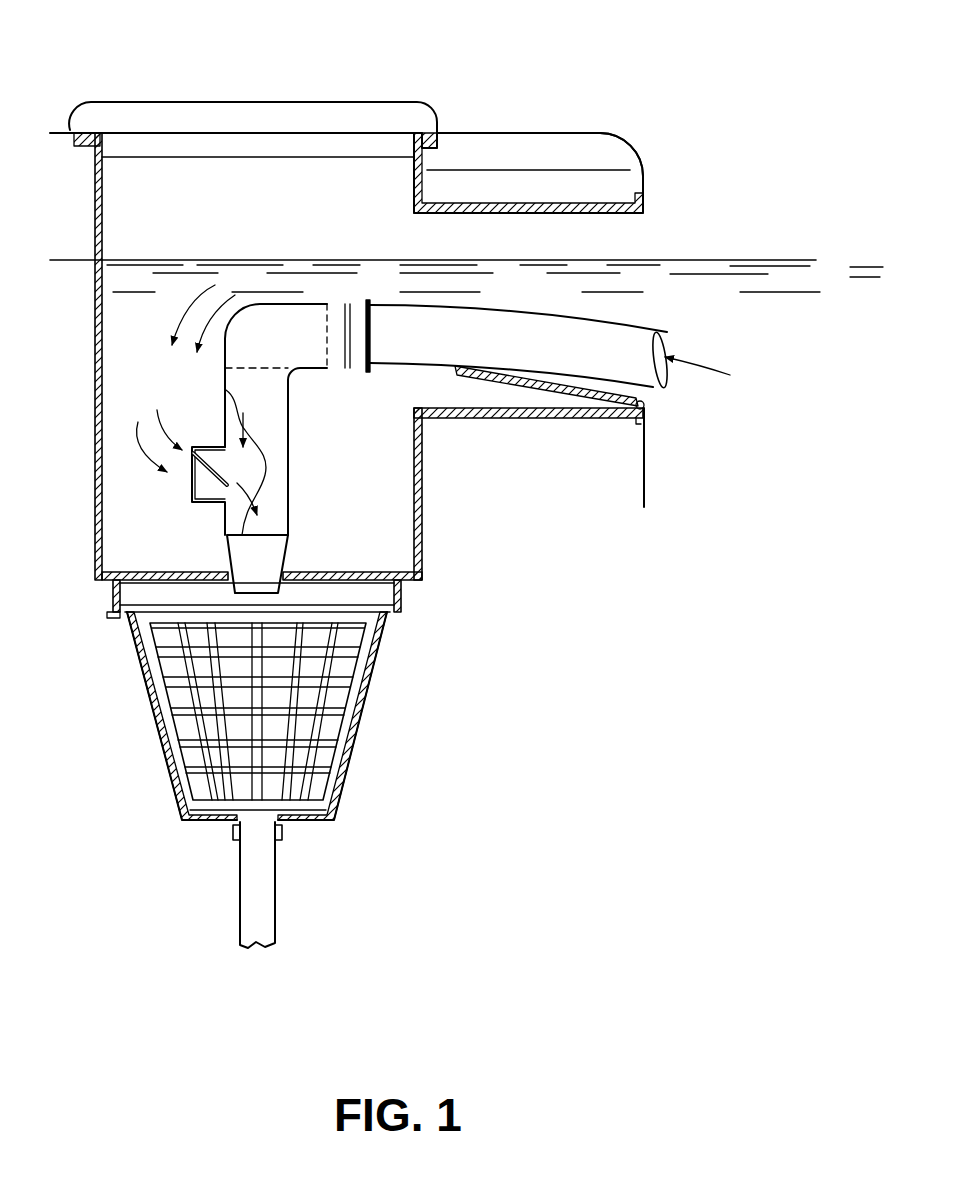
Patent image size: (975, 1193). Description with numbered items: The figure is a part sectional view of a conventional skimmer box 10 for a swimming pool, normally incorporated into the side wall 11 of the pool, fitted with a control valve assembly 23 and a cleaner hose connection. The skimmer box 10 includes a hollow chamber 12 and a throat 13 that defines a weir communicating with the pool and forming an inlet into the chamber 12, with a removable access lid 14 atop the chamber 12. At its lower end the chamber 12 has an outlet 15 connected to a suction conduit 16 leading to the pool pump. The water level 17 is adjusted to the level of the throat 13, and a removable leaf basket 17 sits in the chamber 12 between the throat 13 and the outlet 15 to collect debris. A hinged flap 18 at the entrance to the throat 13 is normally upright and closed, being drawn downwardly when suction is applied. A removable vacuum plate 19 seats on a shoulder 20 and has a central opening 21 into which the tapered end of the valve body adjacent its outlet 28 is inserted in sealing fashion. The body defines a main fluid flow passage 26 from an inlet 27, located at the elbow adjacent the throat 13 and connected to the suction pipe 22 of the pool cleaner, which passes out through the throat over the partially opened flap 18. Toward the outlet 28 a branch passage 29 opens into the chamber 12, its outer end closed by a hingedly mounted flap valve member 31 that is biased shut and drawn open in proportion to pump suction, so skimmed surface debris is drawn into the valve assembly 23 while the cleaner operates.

The skimmer box 10 is at (497, 78).
The side wall 11 is at (655, 153).
The hollow chamber 12 is at (93, 250).
The throat 13 is at (657, 233).
The removable access lid 14 is at (210, 101).
The outlet 15 is at (282, 835).
The suction conduit 16 is at (240, 888).
The water level / leaf basket 17 is at (753, 261).
The hinged flap 18 is at (583, 419).
The vacuum plate 19 is at (128, 572).
The shoulder 20 is at (413, 597).
The central opening 21 is at (290, 572).
The suction pipe 22 is at (667, 328).
The valve assembly 23 is at (198, 377).
The main fluid flow passage 26 is at (220, 418).
The inlet 27 is at (420, 413).
The outlet 28 is at (297, 557).
The branch passage 29 is at (193, 490).
The flap valve member 31 is at (190, 478).